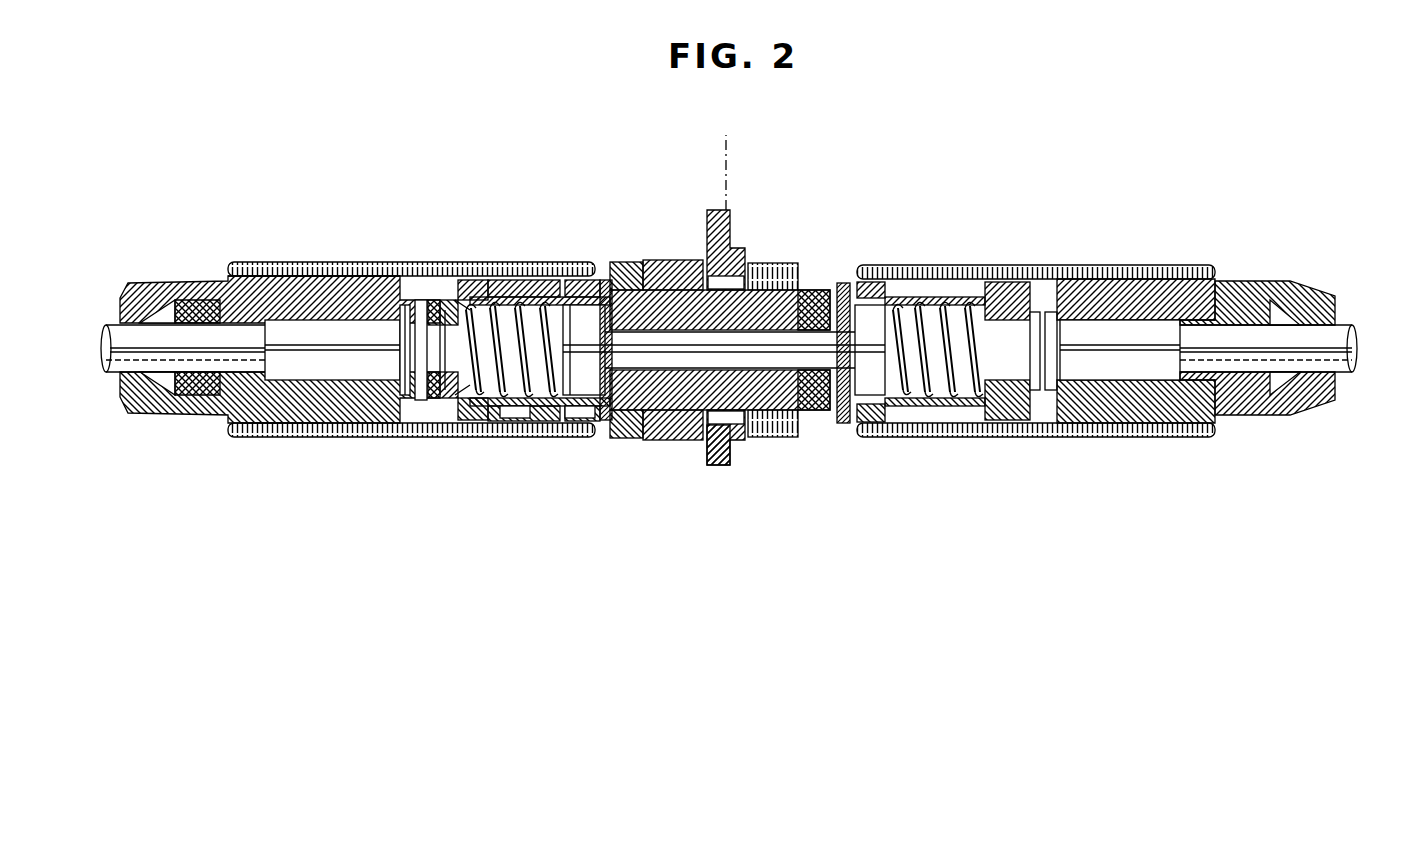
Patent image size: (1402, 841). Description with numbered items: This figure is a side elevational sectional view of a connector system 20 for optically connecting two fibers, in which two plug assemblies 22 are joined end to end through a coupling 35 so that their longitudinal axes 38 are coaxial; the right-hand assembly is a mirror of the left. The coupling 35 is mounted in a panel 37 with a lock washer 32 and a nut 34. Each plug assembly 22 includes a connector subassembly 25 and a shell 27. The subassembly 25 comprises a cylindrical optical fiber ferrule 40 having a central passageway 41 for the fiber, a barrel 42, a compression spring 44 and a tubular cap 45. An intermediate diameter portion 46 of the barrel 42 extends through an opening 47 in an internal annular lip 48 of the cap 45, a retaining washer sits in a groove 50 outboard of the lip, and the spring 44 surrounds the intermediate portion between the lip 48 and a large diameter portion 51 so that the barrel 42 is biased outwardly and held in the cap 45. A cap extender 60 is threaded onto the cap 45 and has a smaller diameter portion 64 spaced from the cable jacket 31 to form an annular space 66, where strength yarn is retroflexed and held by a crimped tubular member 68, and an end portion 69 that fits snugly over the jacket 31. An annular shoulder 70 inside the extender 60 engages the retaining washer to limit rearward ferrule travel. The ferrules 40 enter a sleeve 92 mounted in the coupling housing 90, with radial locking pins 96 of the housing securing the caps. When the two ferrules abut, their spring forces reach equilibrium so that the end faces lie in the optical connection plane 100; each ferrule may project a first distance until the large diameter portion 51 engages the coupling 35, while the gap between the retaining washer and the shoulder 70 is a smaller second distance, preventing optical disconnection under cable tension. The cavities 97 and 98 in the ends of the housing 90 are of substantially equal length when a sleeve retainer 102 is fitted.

The connector system 20 is at (900, 114).
The plug assembly 22 is at (340, 440).
The connector subassembly 25 is at (170, 278).
The shell 27 is at (336, 262).
The cable jacket 31 is at (112, 372).
The lock washer 32 is at (752, 262).
The nut 34 is at (796, 265).
The coupling 35 is at (771, 165).
The panel 37 is at (718, 470).
The longitudinal axis 38 is at (100, 348).
The optical fiber ferrule 40 is at (660, 340).
The passageway 41 is at (665, 440).
The connector body or barrel 42 is at (545, 290).
The compression spring 44 is at (472, 292).
The tubular cap 45 is at (600, 430).
The intermediate diameter portion 46 is at (512, 305).
The opening 47 is at (428, 300).
The annular lip 48 is at (440, 310).
The groove 50 is at (422, 428).
The large diameter portion 51 is at (588, 330).
The cap extender 60 is at (266, 438).
The smaller diameter portion 64 is at (288, 432).
The annular space 66 is at (204, 412).
The crimped tubular member 68 is at (298, 330).
The end portion 69 is at (160, 400).
The annular shoulder 70 is at (392, 428).
The coupling housing 90 is at (668, 300).
The sleeve 92 is at (622, 422).
The locking pin 96 is at (560, 432).
The cavity 97 is at (505, 430).
The cavity 98 is at (930, 310).
The optical connection plane 100 is at (722, 150).
The sleeve retainer 102 is at (830, 290).